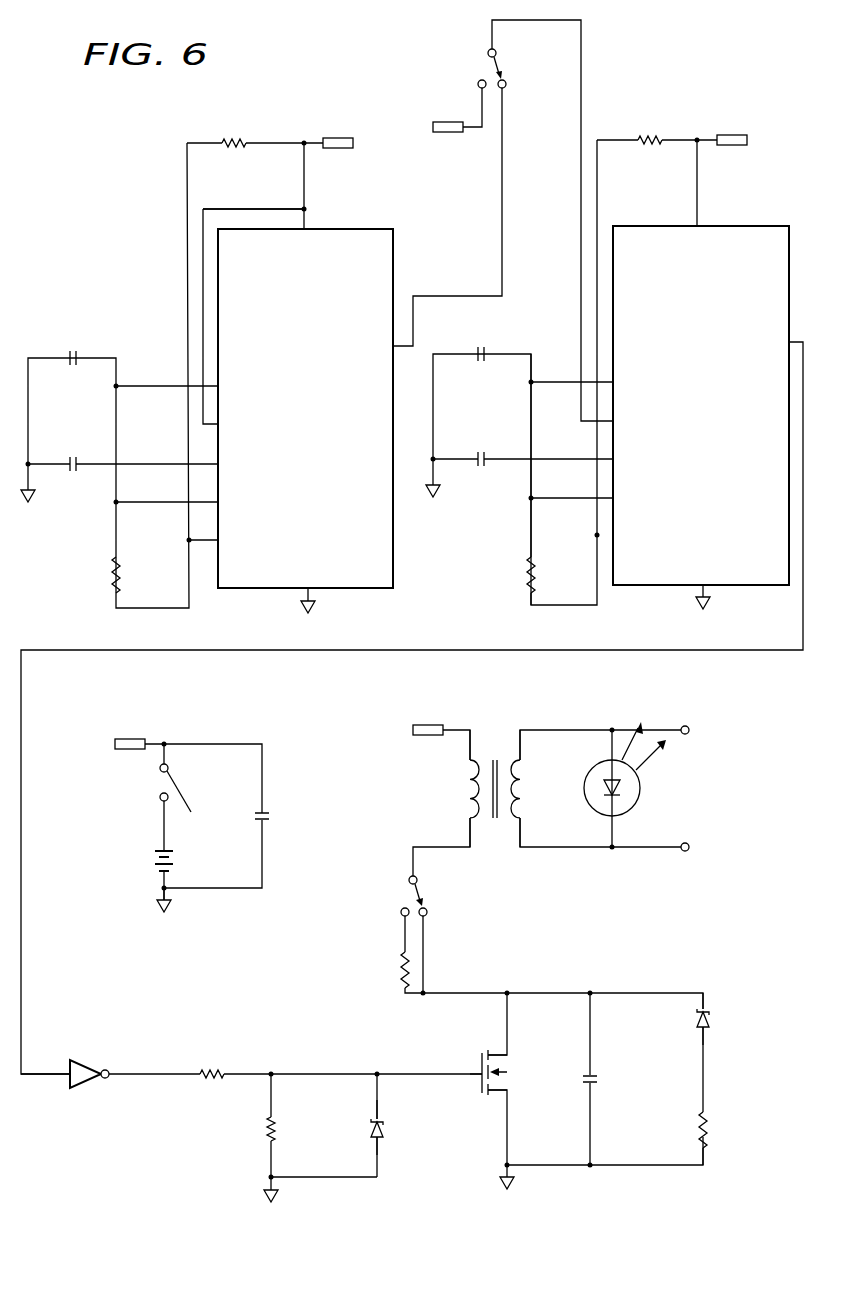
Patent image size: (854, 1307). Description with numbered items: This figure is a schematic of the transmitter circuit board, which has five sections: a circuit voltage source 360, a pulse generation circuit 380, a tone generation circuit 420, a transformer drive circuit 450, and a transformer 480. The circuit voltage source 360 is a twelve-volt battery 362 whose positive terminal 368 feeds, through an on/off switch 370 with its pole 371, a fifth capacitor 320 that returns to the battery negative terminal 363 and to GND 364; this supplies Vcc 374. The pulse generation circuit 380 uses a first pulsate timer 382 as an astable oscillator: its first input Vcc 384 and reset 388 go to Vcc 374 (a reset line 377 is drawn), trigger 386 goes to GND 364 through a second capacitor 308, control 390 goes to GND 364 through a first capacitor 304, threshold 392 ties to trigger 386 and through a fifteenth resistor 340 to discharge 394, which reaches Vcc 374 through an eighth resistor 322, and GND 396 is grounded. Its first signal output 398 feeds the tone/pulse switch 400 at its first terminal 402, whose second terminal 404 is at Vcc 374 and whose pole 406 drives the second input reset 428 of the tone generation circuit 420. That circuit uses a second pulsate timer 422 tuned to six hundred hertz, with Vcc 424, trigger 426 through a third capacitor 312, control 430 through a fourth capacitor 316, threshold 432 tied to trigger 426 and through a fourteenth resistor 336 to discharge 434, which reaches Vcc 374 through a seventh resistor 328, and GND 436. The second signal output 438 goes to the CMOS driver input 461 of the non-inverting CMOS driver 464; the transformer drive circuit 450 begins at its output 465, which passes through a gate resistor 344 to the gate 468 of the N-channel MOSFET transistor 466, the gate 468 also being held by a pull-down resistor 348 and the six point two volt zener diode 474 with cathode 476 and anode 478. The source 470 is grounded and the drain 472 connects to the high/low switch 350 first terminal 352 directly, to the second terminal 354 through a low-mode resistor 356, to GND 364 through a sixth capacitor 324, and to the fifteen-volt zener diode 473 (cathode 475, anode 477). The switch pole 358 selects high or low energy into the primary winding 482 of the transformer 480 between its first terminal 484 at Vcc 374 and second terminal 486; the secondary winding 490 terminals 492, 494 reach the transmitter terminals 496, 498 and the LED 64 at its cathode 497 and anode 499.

The LED indicator 64 is at (643, 789).
The capacitor C1 304 is at (73, 474).
The capacitor C2 308 is at (71, 368).
The capacitor C3 312 is at (480, 364).
The capacitor C4 316 is at (480, 468).
The capacitor C5 320 is at (298, 821).
The resistor R8 322 is at (233, 150).
The capacitor C6 324 is at (580, 1081).
The resistor R7 328 is at (650, 135).
The resistor R14 336 is at (523, 568).
The resistor R15 340 is at (108, 573).
The resistor R25A 344 is at (212, 1081).
The resistor R26 348 is at (278, 1126).
The high/low switch 350 is at (353, 892).
The high/low switch first terminal 352 is at (427, 915).
The high/low switch second terminal 354 is at (402, 915).
The resistor R29 356 is at (400, 977).
The selector switch pole 358 is at (417, 880).
The circuit voltage source 360 is at (284, 767).
The 12-volt battery 362 is at (180, 861).
The battery negative terminal 363 is at (170, 896).
The GND 364 is at (25, 503).
The battery positive terminal 368 is at (160, 801).
The on/off switch 370 is at (95, 783).
The on/off switch pole 371 is at (173, 779).
The Vcc 374 is at (338, 136).
The reset line 377 is at (263, 208).
The pulse generation circuit 380 is at (350, 592).
The first pulsate 555 timer 382 is at (252, 292).
The first input Vcc 384 is at (322, 247).
The first input trigger 386 is at (293, 386).
The first input reset 388 is at (277, 426).
The first input control 390 is at (300, 465).
The first input threshold 392 is at (319, 503).
The first input discharge 394 is at (317, 541).
The first input GND 396 is at (326, 578).
The first signal output 398 is at (326, 349).
The tone/pulse selector switch 400 is at (458, 46).
The tone/pulse switch first terminal 402 is at (506, 88).
The tone/pulse switch second terminal 404 is at (478, 86).
The tone/pulse switch pole 406 is at (496, 50).
The tone generation circuit 420 is at (740, 588).
The second pulsate 555 timer 422 is at (645, 288).
The second input Vcc 424 is at (715, 243).
The second input trigger 426 is at (688, 384).
The second input reset 428 is at (672, 423).
The second input control 430 is at (694, 461).
The second input threshold 432 is at (714, 500).
The second input discharge 434 is at (710, 537).
The second input GND 436 is at (720, 574).
The second signal output 438 is at (720, 346).
The transformer drive circuit 450 is at (645, 939).
The CMOS driver input 461 is at (65, 1081).
The non inverting CMOS driver 464 is at (105, 1049).
The CMOS driver output 465 is at (110, 1072).
The transistor 466 is at (478, 1061).
The transistor input gate 468 is at (478, 1081).
The transistor terminal source 470 is at (510, 1091).
The transistor terminal drain 472 is at (488, 1048).
The 15.0 volt zener diode 473 is at (696, 1021).
The 6.2V zener diode 474 is at (370, 1131).
The 15-volt zener diode cathode terminal 475 is at (707, 1011).
The 6.2 volt zener diode cathode terminal 476 is at (372, 1119).
The 15-volt zener diode anode terminal 477 is at (710, 1031).
The 6.2 volt zener diode anode terminal 478 is at (385, 1139).
The transformer 480 is at (489, 725).
The primary winding 482 is at (478, 784).
The primary winding first terminal 484 is at (468, 741).
The primary winding second terminal 486 is at (468, 836).
The secondary winding 490 is at (512, 784).
The secondary winding first terminal 492 is at (522, 741).
The secondary winding second terminal 494 is at (522, 837).
The transmitter terminal 496 is at (687, 725).
The LED cathode terminal 497 is at (614, 727).
The transmitter terminal 498 is at (683, 853).
The LED anode terminal 499 is at (608, 851).